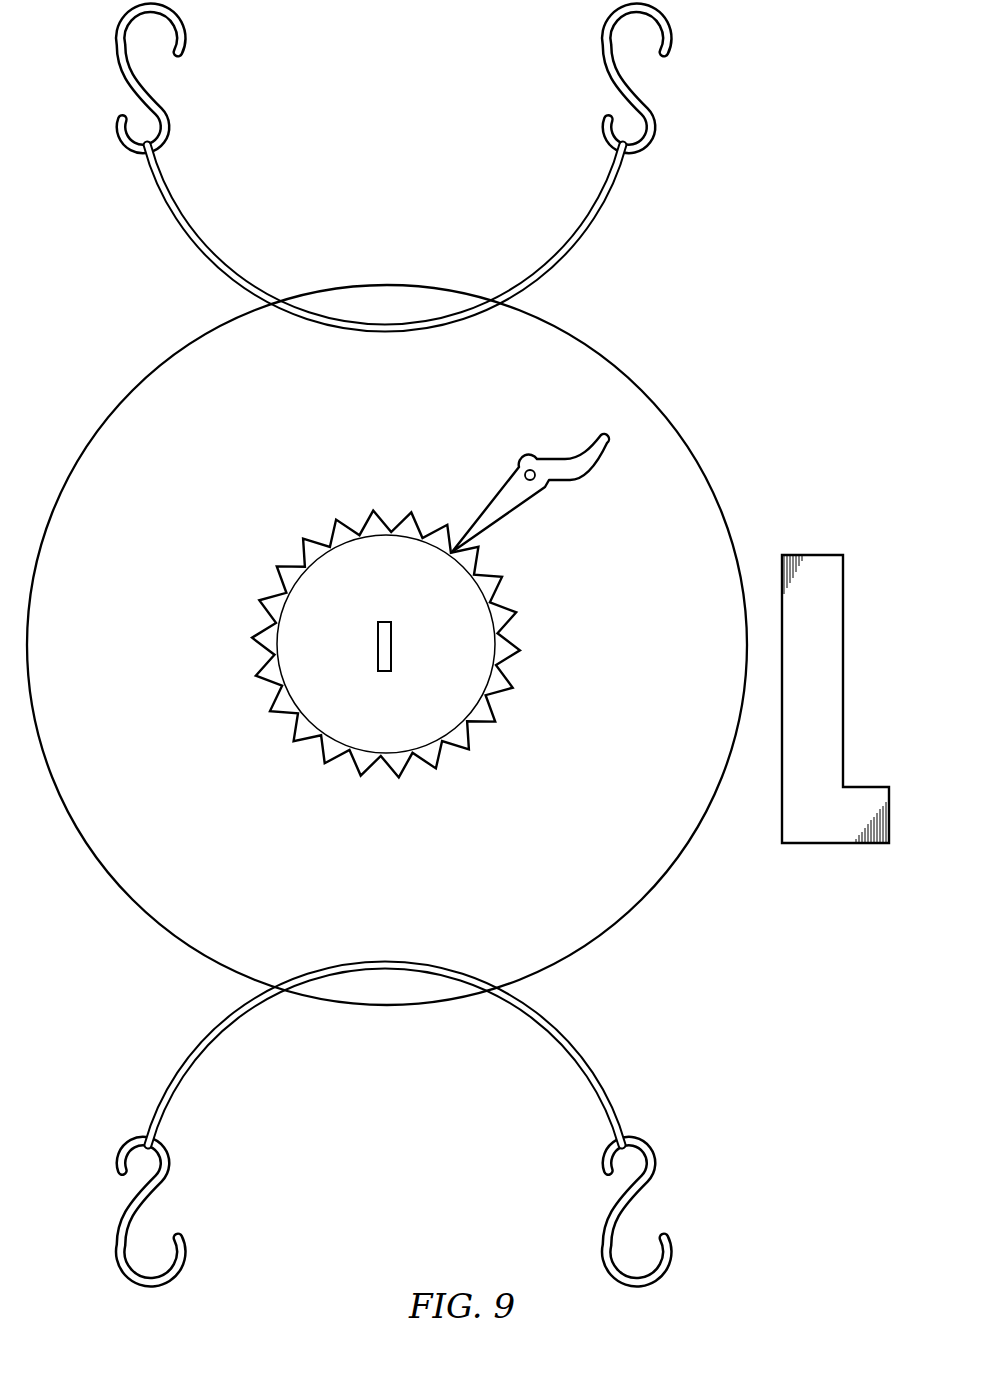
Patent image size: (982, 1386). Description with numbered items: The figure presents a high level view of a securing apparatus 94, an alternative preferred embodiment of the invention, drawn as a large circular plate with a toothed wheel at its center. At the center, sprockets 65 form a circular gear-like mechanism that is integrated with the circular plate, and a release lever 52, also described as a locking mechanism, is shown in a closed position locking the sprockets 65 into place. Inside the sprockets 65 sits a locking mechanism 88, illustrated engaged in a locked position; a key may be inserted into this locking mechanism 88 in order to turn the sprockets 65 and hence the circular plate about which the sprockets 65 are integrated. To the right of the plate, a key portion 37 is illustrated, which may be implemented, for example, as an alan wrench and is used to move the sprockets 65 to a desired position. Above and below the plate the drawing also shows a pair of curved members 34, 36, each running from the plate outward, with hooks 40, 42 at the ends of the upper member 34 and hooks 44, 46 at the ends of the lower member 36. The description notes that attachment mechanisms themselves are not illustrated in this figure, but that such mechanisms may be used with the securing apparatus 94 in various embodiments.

The upper arcuate strap 34 is at (590, 232).
The lower arcuate strap 36 is at (570, 1036).
The key portion 37 is at (821, 554).
The S-hook 40 is at (111, 38).
The S-hook 42 is at (670, 30).
The S-hook 44 is at (118, 1256).
The S-hook 46 is at (674, 1256).
The release lever 52 is at (494, 500).
The sprockets 65 is at (519, 655).
The locking mechanism 88 is at (392, 650).
The securing apparatus 94 is at (141, 382).